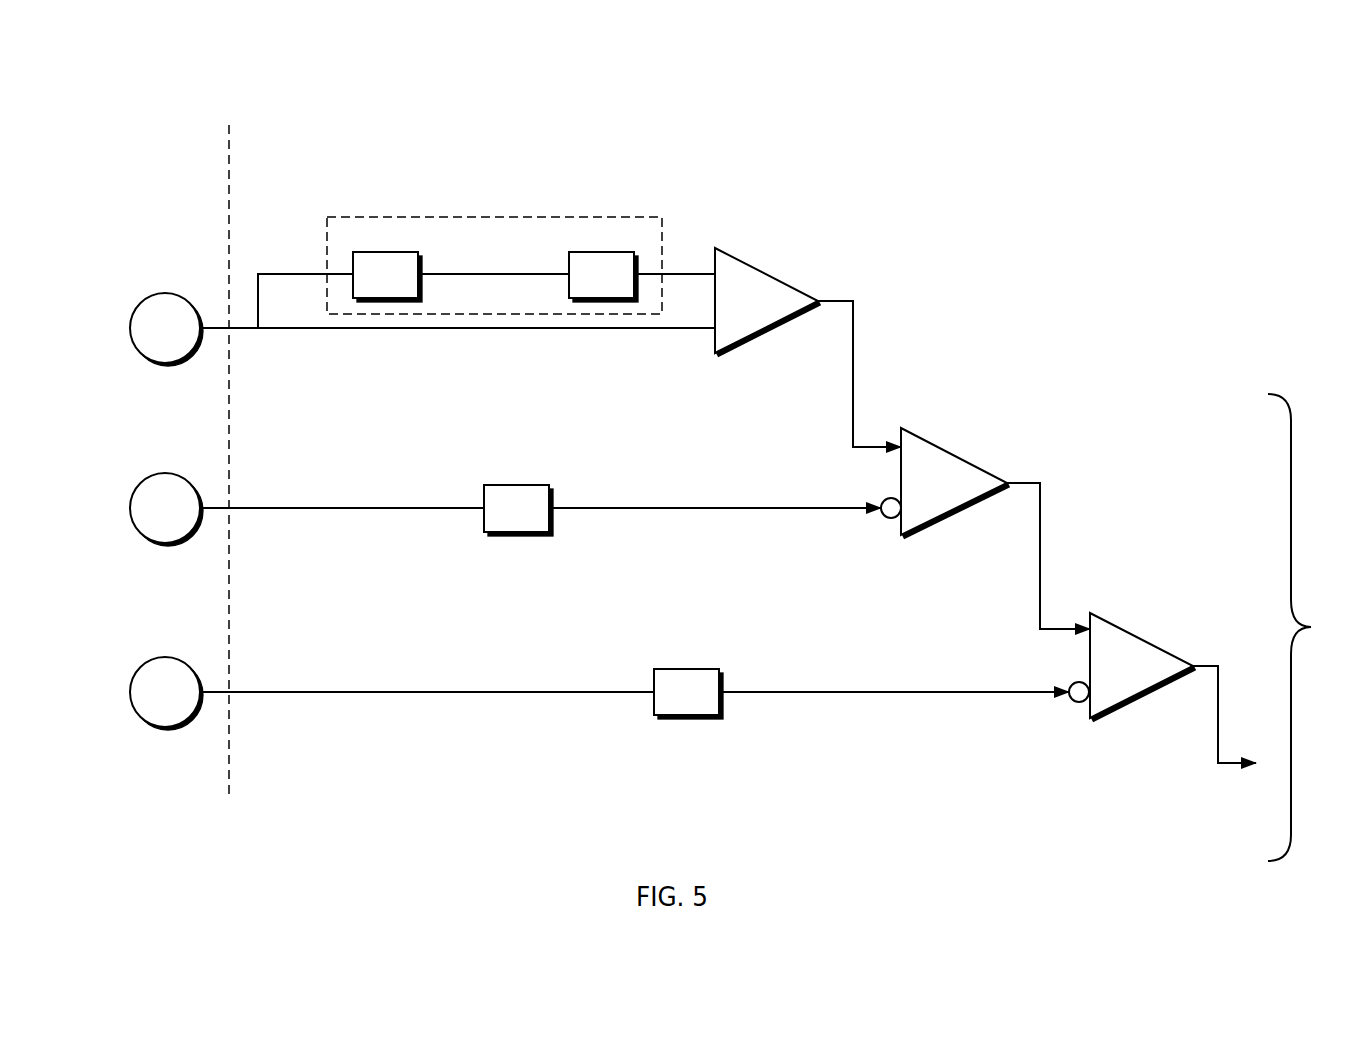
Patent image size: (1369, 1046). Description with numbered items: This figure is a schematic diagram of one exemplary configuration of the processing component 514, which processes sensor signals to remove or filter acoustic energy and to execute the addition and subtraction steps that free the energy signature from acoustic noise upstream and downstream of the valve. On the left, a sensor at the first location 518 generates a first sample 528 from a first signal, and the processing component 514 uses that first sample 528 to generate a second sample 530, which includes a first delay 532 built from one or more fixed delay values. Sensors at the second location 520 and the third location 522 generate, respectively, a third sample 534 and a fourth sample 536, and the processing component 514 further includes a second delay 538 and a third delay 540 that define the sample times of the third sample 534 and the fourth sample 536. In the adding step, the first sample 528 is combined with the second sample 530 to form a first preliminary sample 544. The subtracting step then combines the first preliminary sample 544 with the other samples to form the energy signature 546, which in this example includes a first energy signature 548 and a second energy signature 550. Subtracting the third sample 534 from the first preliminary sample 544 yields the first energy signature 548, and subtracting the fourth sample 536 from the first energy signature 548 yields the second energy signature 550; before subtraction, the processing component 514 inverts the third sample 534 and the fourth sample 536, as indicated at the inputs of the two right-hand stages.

The processing component 514 is at (953, 163).
The first location 518 is at (138, 291).
The second location 520 is at (138, 471).
The third location 522 is at (138, 654).
The first sample 528 is at (313, 340).
The second sample 530 is at (313, 265).
The first delay 532 is at (618, 246).
The third sample 534 is at (313, 497).
The fourth sample 536 is at (313, 683).
The second delay 538 is at (535, 470).
The third delay 540 is at (713, 650).
The first preliminary sample 544 is at (888, 345).
The energy signature 546 is at (1079, 627).
The first energy signature 548 is at (1075, 535).
The second energy signature 550 is at (1211, 790).